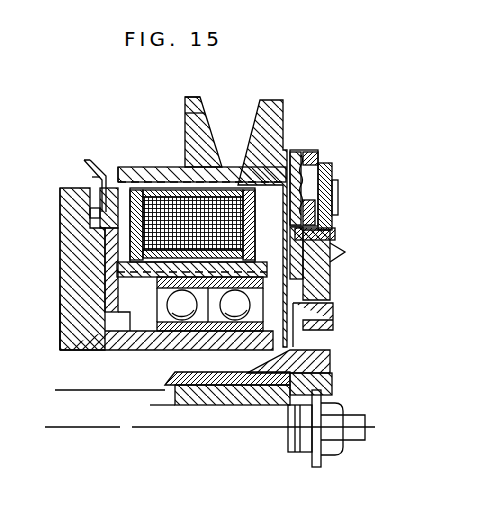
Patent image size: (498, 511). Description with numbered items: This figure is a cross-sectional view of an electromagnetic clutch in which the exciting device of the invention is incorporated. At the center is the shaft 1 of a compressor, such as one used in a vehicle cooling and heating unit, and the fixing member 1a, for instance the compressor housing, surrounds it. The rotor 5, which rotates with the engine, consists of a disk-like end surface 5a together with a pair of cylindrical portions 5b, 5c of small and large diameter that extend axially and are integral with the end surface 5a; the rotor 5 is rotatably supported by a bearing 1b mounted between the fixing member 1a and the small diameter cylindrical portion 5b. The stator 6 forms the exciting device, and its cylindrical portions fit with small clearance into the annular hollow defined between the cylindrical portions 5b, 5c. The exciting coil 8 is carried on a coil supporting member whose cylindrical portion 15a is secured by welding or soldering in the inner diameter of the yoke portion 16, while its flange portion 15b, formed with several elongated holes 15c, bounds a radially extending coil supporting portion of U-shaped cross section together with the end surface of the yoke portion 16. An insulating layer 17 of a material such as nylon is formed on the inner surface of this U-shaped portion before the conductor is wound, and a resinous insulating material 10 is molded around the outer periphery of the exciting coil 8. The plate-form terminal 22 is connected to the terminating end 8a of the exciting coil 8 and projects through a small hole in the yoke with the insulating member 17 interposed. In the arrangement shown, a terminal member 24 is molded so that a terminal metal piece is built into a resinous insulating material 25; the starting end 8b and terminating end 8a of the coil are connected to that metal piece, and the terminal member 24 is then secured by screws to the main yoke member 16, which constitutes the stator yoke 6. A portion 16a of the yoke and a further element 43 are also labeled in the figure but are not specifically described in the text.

The shaft 1 is at (82, 396).
The fixing member 1a is at (168, 348).
The bearing 1b is at (158, 320).
The rotor 5 is at (269, 103).
The end surface 5a is at (334, 318).
The small diameter cylindrical portion 5b is at (108, 294).
The large diameter cylindrical portion 5c is at (178, 192).
The stator 6 is at (230, 167).
The exciting coil 8 is at (202, 166).
The terminating end 8a is at (143, 186).
The starting end 8b is at (136, 165).
The resinous insulating material 10 is at (172, 190).
The cylindrical portion 15a is at (323, 293).
The flange portion 15b is at (337, 195).
The elongated holes 15c is at (318, 233).
The yoke portion 16 is at (75, 246).
The housing portion 16a is at (82, 268).
The insulating layer 17 is at (307, 278).
The terminal 22 is at (86, 176).
The terminal member 24 is at (92, 219).
The resinous insulating material 25 is at (96, 170).
The wave spring 43 is at (306, 150).